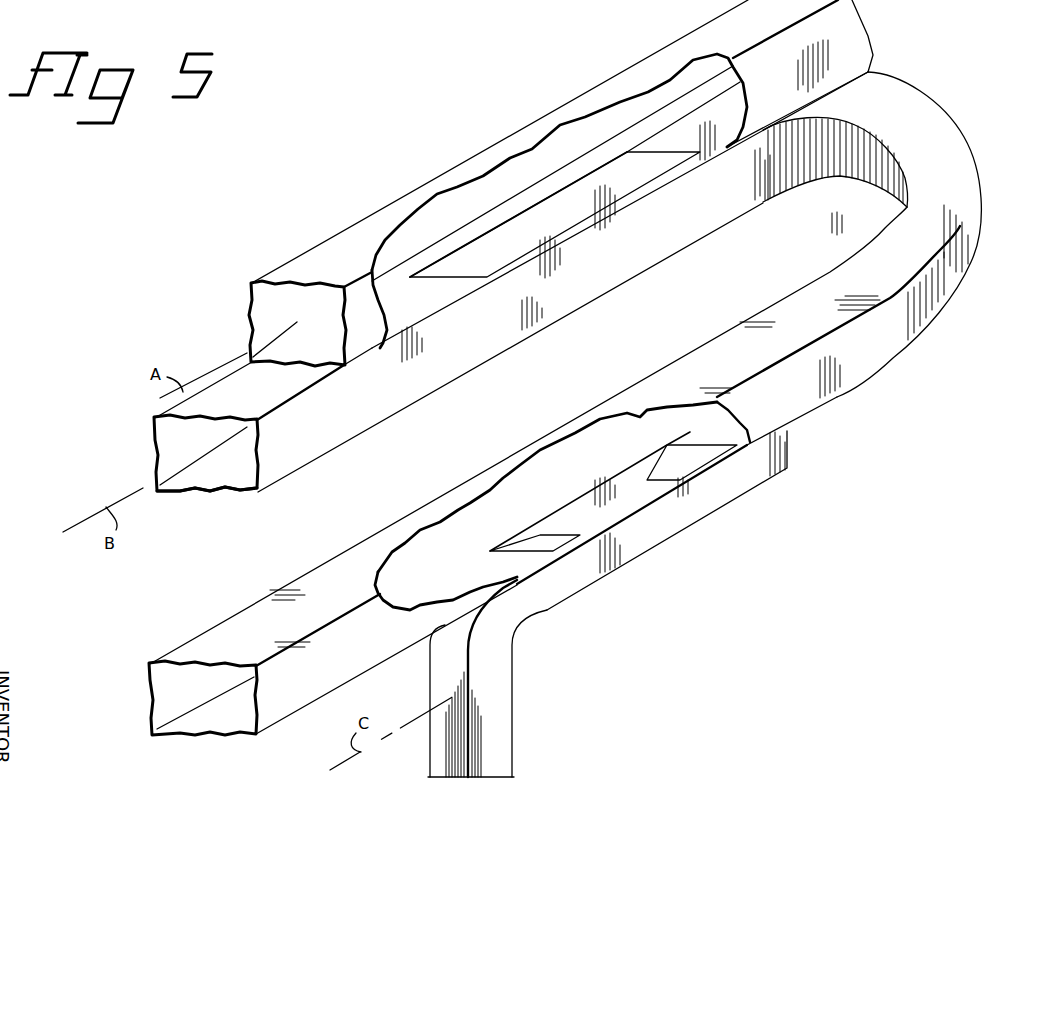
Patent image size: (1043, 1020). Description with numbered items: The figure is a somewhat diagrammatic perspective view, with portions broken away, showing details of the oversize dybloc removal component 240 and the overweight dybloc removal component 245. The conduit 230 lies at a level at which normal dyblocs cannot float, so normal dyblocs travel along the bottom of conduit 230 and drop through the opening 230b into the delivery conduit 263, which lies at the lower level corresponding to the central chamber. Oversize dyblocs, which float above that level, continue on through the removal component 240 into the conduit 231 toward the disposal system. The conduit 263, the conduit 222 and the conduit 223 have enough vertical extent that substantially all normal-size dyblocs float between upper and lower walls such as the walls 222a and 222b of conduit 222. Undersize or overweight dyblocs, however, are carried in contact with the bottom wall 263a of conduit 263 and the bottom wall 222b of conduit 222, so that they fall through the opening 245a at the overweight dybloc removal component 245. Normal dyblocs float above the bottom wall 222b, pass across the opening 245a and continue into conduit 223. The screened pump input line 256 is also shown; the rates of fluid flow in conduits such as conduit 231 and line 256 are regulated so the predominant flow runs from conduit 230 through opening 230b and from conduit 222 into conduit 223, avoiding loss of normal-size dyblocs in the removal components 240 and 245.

The conduit 222 is at (963, 135).
The upper wall of conduit 222 222a is at (788, 310).
The bottom wall of conduit 222 222b is at (727, 427).
The conduit 223 is at (227, 627).
The conduit 230 is at (300, 283).
The opening 230b is at (600, 200).
The conduit 231 is at (848, 38).
The oversize dybloc removal component 240 is at (489, 111).
The overweight dybloc removal component 245 is at (745, 523).
The opening 245a is at (642, 498).
The input line of pump 256 is at (506, 671).
The delivery conduit 263 is at (243, 450).
The bottom wall of conduit 263 263a is at (202, 484).